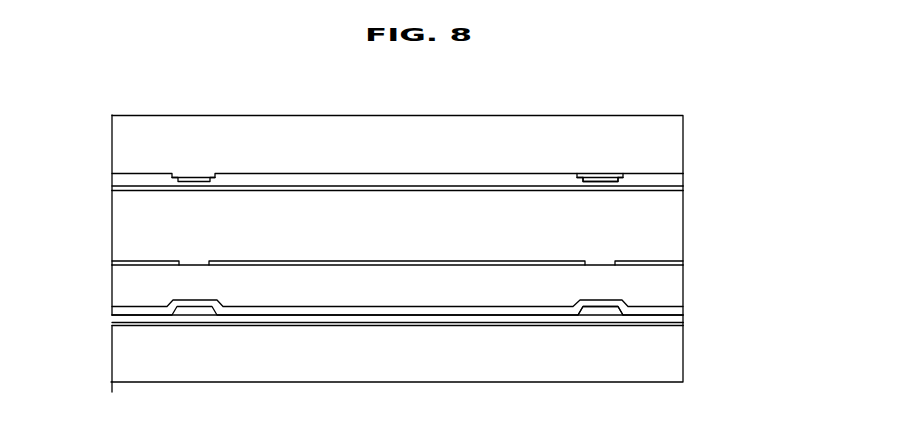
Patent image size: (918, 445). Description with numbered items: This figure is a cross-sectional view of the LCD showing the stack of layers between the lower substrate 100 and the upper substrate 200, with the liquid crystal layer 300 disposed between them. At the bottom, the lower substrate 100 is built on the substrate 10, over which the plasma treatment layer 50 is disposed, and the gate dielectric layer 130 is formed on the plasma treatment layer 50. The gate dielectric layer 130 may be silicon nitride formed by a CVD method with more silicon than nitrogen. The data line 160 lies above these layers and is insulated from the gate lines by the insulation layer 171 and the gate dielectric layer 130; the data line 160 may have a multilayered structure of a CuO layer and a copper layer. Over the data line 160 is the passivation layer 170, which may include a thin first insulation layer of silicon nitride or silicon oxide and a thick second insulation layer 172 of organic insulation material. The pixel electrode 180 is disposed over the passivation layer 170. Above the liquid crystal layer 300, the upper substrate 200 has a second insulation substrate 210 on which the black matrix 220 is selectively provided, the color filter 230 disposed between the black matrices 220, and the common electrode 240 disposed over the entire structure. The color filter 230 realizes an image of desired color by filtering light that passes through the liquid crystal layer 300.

The upper substrate 200 is at (121, 97).
The second insulation substrate 210 is at (683, 140).
The black matrix 220 is at (599, 173).
The color filter 230 is at (683, 176).
The common electrode 240 is at (683, 190).
The liquid crystal layer 300 is at (683, 225).
The pixel electrode 180 is at (683, 262).
The passivation layer 170 is at (753, 276).
The second insulation layer 172 is at (683, 280).
The insulation layer 171 is at (683, 307).
The data line 160 is at (600, 312).
The gate dielectric layer 130 is at (683, 317).
The plasma treatment layer 50 is at (683, 324).
The substrate 10 is at (683, 366).
The lower substrate 100 is at (114, 413).